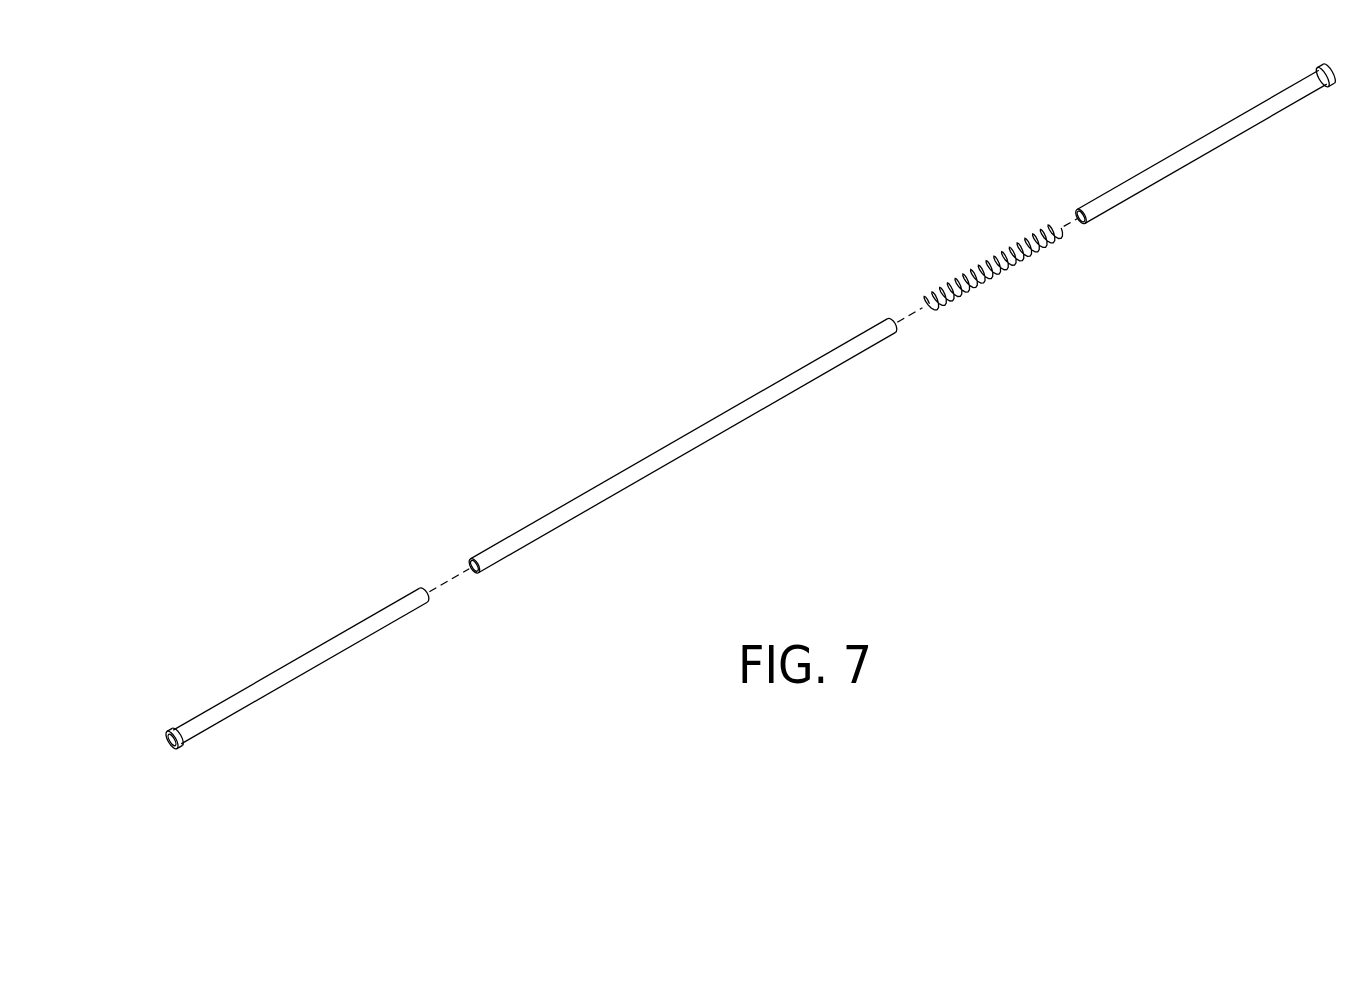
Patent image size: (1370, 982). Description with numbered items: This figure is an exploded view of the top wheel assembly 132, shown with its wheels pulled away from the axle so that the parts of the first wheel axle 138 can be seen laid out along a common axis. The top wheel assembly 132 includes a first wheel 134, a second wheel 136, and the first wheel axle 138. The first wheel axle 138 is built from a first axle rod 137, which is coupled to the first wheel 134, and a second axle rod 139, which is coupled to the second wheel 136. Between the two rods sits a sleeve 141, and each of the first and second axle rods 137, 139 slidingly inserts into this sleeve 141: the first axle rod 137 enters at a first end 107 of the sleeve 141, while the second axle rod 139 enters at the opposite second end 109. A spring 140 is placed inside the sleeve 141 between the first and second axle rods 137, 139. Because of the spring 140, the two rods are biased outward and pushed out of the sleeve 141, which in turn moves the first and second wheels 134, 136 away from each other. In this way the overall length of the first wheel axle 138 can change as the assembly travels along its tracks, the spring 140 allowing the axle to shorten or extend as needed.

The top wheel assembly 132 is at (688, 166).
The first wheel 134 is at (176, 728).
The second wheel 136 is at (1320, 65).
The first axle rod 137 is at (372, 625).
The first wheel axle 138 is at (524, 410).
The second axle rod 139 is at (1100, 203).
The spring 140 is at (975, 270).
The sleeve 141 is at (707, 425).
The first end 107 is at (474, 578).
The second end 109 is at (900, 332).